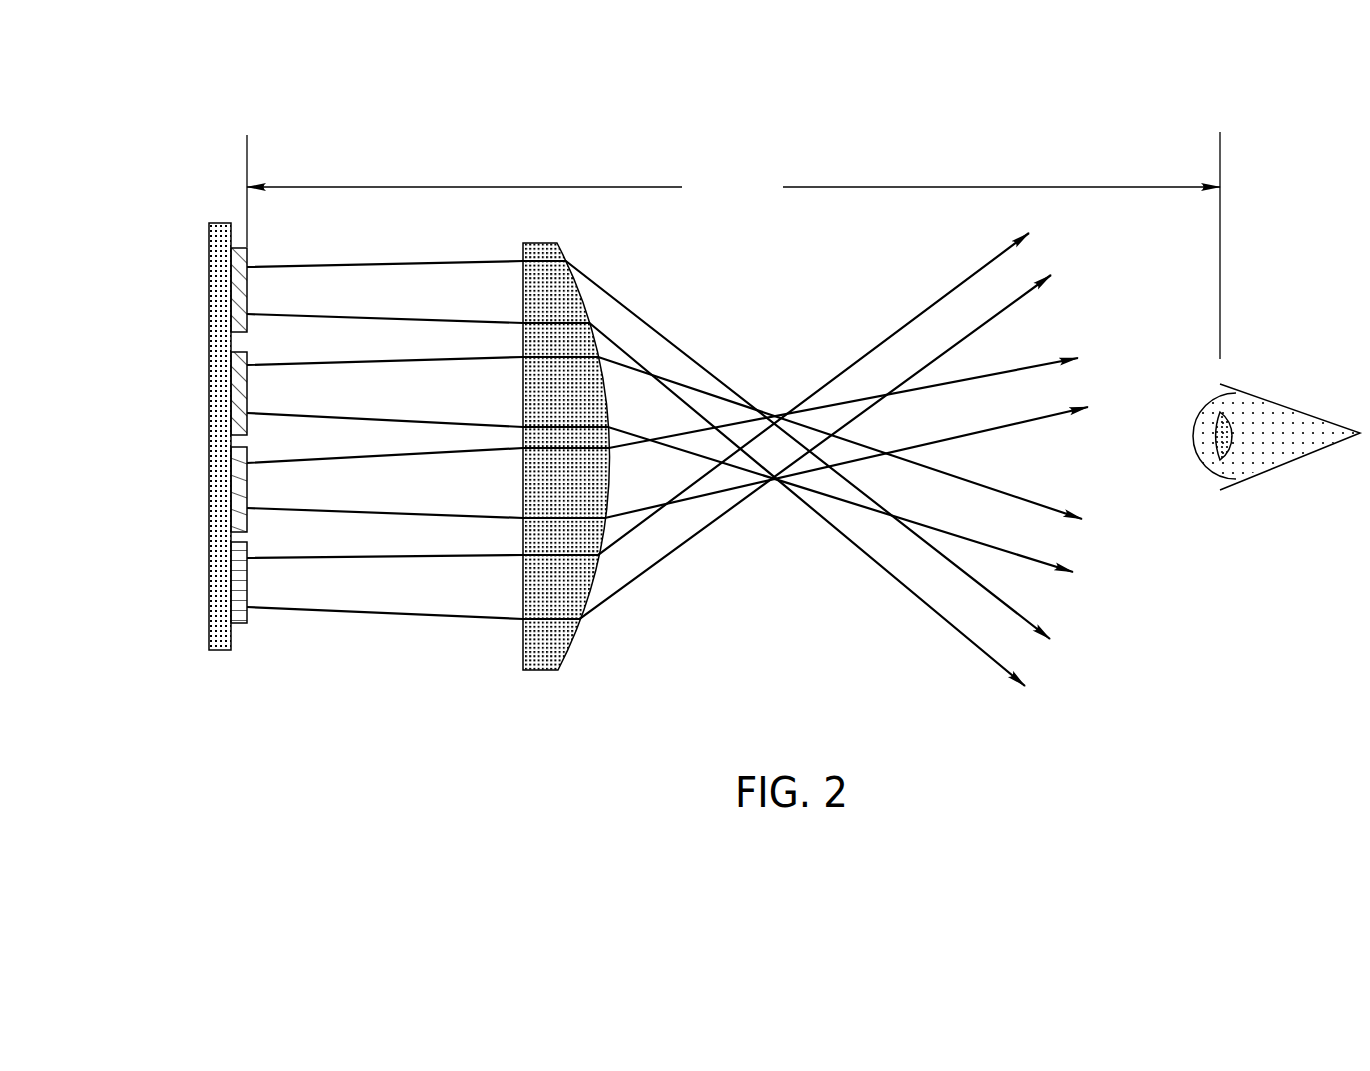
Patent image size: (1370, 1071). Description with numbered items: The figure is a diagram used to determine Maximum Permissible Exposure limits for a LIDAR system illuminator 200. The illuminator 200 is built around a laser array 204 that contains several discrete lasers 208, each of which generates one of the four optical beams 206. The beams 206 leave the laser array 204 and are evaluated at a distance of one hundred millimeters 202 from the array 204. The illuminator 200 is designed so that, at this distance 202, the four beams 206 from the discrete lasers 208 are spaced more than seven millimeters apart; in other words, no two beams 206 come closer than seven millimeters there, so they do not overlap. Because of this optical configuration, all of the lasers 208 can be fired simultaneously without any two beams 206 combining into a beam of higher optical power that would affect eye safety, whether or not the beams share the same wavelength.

The LIDAR system illuminator 200 is at (232, 80).
The 100 mm distance 202 is at (733, 175).
The laser array 204 is at (209, 634).
The optical beams 206 is at (398, 600).
The discrete lasers 208 is at (247, 621).